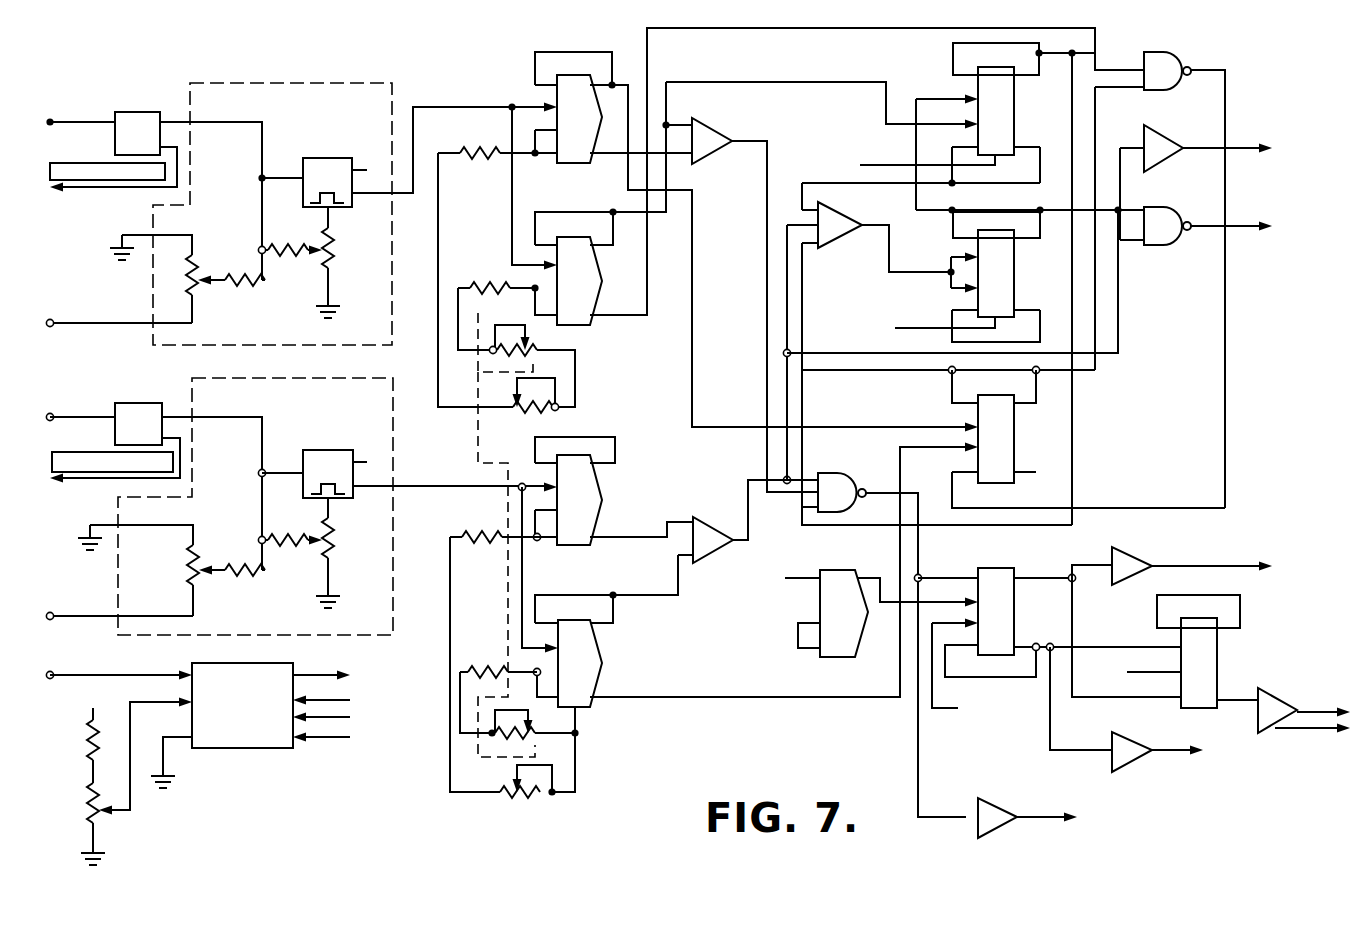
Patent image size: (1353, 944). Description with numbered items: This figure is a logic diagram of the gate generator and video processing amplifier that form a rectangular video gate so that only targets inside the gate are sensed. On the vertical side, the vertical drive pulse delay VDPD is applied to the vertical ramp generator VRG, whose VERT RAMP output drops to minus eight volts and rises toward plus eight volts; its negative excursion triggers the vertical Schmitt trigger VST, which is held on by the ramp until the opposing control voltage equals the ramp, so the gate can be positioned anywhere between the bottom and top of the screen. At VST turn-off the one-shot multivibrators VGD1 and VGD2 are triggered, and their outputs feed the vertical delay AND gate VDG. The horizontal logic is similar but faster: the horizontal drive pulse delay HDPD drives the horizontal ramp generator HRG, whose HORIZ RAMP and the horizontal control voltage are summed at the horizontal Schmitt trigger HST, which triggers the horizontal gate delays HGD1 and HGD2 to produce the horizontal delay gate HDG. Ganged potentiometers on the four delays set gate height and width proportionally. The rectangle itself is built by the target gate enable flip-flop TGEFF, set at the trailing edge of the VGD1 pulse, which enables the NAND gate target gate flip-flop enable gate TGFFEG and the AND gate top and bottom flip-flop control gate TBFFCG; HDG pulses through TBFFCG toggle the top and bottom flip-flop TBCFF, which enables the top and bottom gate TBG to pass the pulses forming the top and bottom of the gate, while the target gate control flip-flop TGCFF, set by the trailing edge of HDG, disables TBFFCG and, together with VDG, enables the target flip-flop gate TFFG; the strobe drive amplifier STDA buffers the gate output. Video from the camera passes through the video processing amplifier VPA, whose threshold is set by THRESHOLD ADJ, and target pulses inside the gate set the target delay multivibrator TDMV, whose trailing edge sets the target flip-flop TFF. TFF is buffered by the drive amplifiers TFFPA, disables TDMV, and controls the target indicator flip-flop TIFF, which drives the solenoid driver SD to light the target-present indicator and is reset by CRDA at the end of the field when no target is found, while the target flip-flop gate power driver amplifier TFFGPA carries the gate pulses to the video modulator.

The vertical drive pulse delay VDPD is at (101, 101).
The vertical ramp generator VRG is at (209, 187).
The vertical ramp output VERT RAMP is at (113, 169).
The vertical Schmitt trigger VST is at (301, 205).
The horizontal drive pulse delay HDPD is at (101, 396).
The horizontal ramp generator HRG is at (209, 477).
The horizontal ramp output HORIZ RAMP is at (115, 460).
The horizontal Schmitt trigger HST is at (301, 496).
The video processing amplifier VPA is at (225, 722).
The threshold adjustment THRESHOLD ADJ is at (175, 782).
The vertical gate delay 1 VGD1 is at (708, 242).
The vertical gate delay 2 VGD2 is at (791, 392).
The vertical delay AND gate VDG is at (795, 287).
The horizontal gate delay 1 HGD1 is at (571, 491).
The horizontal gate delay 2 HGD2 is at (714, 628).
The horizontal delay gate HDG is at (715, 535).
The target gate control flip-flop TGCFF is at (948, 284).
The clear reset line CRDA is at (1020, 409).
The top and bottom flip-flop control gate TBFFCG is at (880, 363).
The top and bottom flip-flop TBCFF is at (965, 279).
The target gate flip-flop enable gate TGFFEG is at (1160, 270).
The strobe drive amplifier STDA is at (1196, 176).
The top and bottom gate TBG is at (1196, 218).
The target gate enable flip-flop TGEFF is at (1013, 437).
The target flip-flop gate TFFG is at (910, 636).
The target delay multivibrator TDMV is at (866, 603).
The target flip-flop TFF is at (1049, 633).
The target flip-flop drive amplifier TFFPA is at (1178, 717).
The target flip-flop gate power driver amplifier TFFGPA is at (1027, 811).
The target indicator flip-flop TIFF is at (1165, 636).
The solenoid driver SD is at (1304, 708).